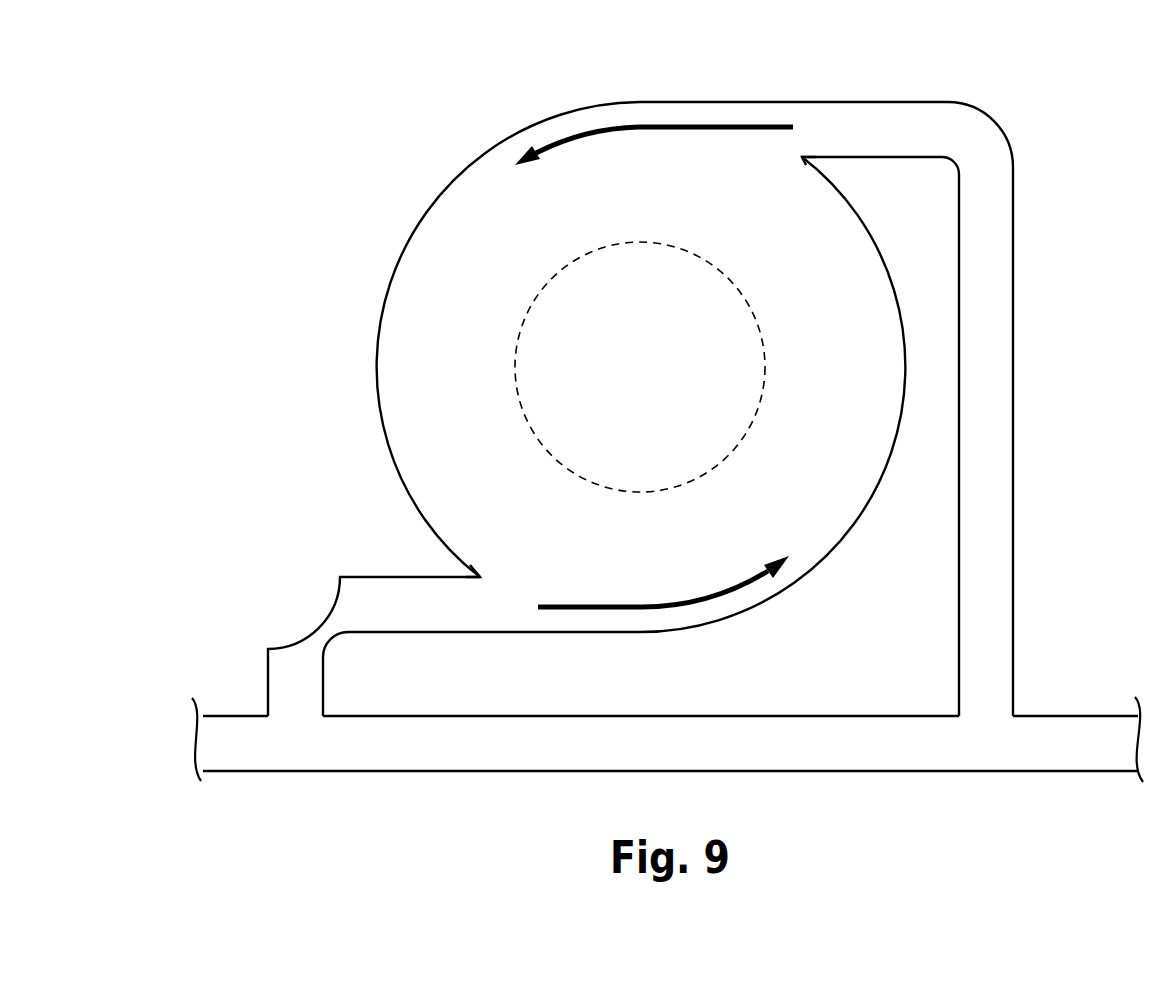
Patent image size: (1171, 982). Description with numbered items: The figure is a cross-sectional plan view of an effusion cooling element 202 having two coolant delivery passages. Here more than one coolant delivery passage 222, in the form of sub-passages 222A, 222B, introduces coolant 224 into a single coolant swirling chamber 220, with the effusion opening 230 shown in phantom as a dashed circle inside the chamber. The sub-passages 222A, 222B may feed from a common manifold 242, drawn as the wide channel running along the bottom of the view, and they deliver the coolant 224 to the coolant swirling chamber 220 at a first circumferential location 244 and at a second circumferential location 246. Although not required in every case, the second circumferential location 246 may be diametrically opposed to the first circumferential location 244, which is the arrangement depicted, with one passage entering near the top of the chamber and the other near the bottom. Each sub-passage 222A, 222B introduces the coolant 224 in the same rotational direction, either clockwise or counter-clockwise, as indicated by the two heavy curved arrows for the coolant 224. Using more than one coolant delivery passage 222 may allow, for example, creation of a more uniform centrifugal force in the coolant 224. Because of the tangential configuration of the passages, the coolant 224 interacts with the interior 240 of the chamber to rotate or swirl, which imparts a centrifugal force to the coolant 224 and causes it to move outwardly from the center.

The blower housing assembly 202 is at (303, 183).
The coolant swirling chamber 220 is at (382, 305).
The coolant delivery passage 222 is at (699, 409).
The sub-passage 222A is at (358, 570).
The sub-passage 222B is at (987, 315).
The coolant 224 is at (672, 127).
The effusion opening 230 is at (765, 345).
The interior 240 is at (701, 367).
The common manifold 242 is at (867, 743).
The first circumferential location 244 is at (792, 142).
The second circumferential location 246 is at (492, 592).